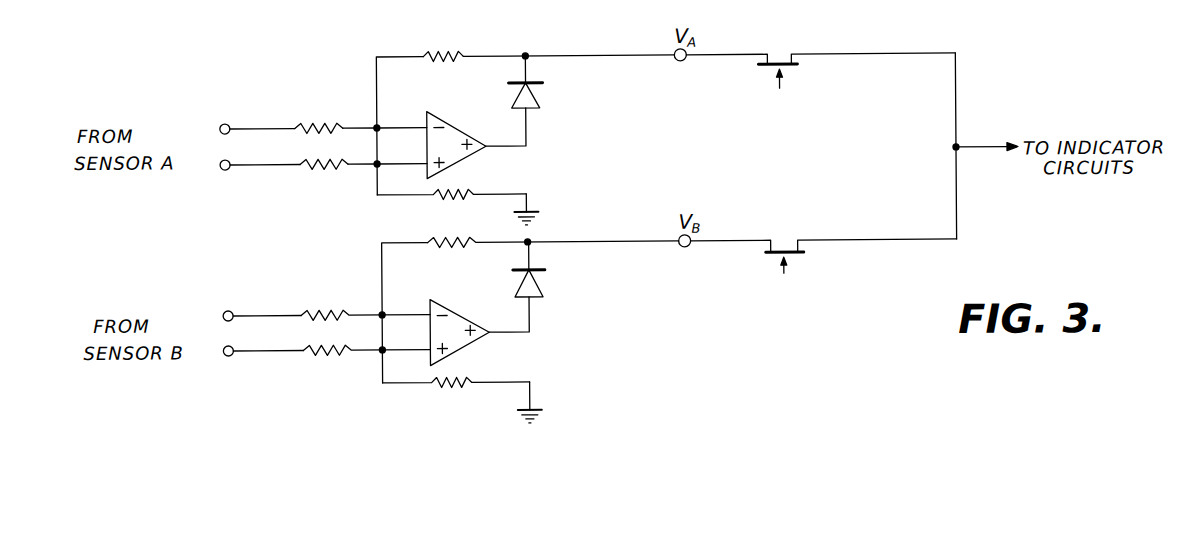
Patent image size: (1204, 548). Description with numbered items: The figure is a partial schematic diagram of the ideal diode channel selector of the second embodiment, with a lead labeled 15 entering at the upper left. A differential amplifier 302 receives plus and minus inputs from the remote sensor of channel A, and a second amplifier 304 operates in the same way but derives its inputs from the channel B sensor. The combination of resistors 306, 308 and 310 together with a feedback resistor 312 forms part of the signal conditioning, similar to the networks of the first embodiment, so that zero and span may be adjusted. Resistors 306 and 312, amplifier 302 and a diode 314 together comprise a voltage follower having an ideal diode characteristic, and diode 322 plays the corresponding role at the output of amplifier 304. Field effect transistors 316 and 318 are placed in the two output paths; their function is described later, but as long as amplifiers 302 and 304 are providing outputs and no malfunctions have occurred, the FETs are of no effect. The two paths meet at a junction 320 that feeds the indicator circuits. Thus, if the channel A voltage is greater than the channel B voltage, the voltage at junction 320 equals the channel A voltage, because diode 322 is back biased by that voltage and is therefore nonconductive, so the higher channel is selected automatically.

The conductor from sensor 15 is at (300, 0).
The differential amplifier 302 is at (476, 104).
The amplifier 304 is at (453, 308).
The resistor 306 is at (345, 99).
The resistor 308 is at (325, 167).
The resistor 310 is at (435, 196).
The feedback resistor 312 is at (440, 54).
The diode 314 is at (545, 95).
The field effect transistor 316 is at (763, 67).
The field effect transistor 318 is at (770, 251).
The junction 320 is at (956, 149).
The diode 322 is at (545, 284).